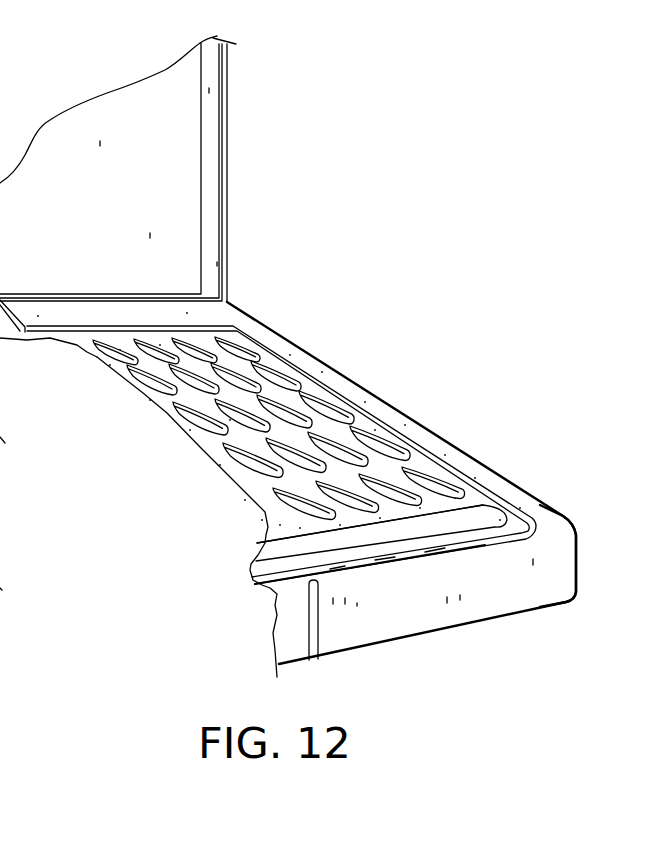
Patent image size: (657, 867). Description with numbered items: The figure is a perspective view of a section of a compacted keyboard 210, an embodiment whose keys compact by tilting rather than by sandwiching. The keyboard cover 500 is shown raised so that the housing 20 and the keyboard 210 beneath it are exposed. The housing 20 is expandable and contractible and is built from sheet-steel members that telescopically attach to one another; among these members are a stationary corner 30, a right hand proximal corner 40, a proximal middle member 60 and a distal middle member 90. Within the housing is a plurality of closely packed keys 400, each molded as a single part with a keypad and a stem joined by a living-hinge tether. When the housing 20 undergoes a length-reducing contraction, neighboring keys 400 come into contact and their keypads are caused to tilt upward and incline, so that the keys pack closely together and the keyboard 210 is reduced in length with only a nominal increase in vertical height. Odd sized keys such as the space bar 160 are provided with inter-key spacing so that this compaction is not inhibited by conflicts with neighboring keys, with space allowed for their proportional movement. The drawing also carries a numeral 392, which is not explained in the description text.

The housing 20 is at (288, 488).
The stationary corner 30 is at (279, 395).
The right hand proximal corner 40 is at (580, 551).
The proximal middle member 60 is at (311, 643).
The distal middle member 90 is at (5, 586).
The space bar 160 is at (394, 605).
The keyboard 210 is at (281, 455).
The fastener 392 is at (11, 474).
The key 400 is at (279, 395).
The keyboard cover 500 is at (183, 157).